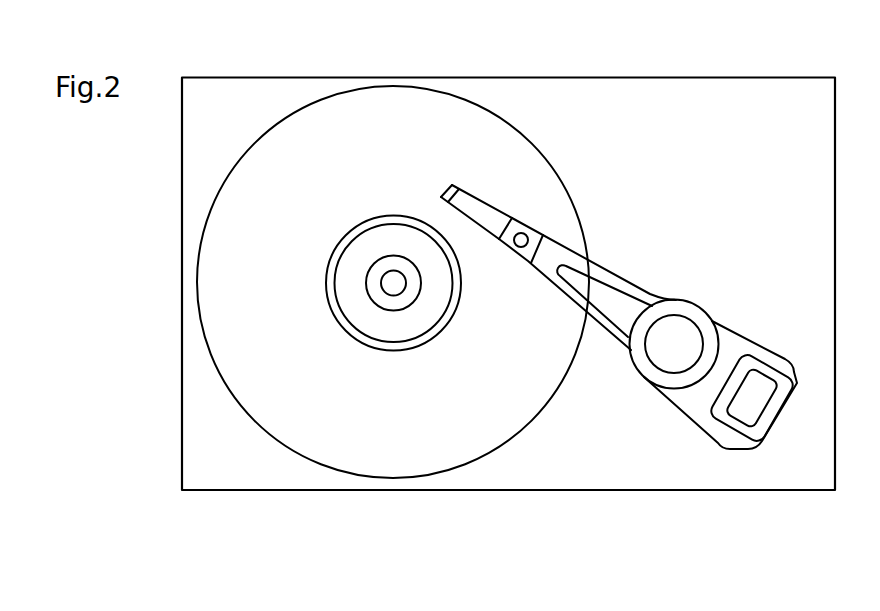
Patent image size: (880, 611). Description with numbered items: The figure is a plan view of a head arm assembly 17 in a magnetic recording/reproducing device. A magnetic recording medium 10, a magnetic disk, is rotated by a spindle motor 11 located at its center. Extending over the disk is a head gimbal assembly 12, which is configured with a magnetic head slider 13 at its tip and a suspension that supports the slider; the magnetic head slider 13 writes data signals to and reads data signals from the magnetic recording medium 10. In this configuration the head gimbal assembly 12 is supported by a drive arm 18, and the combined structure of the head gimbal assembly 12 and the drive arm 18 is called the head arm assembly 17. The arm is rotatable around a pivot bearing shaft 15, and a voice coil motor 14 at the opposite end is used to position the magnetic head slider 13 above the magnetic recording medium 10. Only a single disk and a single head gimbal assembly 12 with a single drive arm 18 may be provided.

The magnetic recording medium 10 is at (320, 464).
The spindle motor 11 is at (393, 295).
The head gimbal assembly 12 is at (497, 238).
The magnetic head slider 13 is at (463, 182).
The voice coil motor 14 is at (780, 414).
The pivot bearing shaft 15 is at (683, 300).
The head arm assembly 17 is at (678, 408).
The drive arm 18 is at (589, 314).